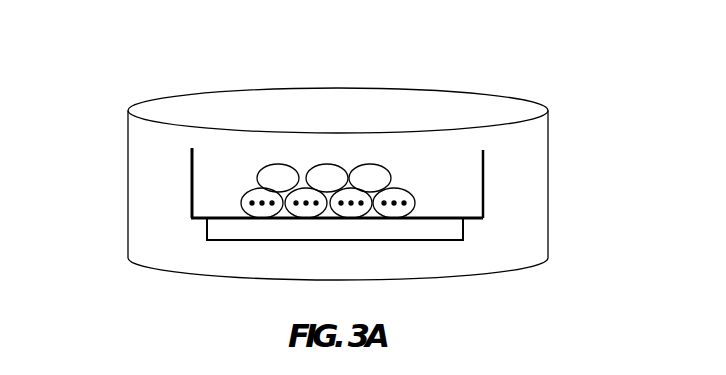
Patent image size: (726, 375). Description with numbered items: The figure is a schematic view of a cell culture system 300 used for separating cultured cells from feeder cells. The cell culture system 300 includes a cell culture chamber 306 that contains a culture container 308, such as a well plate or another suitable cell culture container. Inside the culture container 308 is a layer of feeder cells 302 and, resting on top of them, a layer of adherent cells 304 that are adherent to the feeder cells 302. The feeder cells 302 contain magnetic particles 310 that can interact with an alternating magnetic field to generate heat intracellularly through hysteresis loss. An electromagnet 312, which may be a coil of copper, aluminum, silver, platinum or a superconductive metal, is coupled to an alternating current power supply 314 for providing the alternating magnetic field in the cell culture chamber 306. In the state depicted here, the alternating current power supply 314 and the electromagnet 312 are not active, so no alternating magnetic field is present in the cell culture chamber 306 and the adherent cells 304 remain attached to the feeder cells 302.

The cell culture system 300 is at (457, 70).
The feeder cells 302 is at (255, 191).
The adherent cells 304 is at (258, 180).
The cell culture chamber 306 is at (550, 148).
The culture container 308 is at (485, 205).
The magnetic particles 310 is at (230, 202).
The electromagnet 312 is at (465, 230).
The alternating current power supply 314 is at (203, 230).